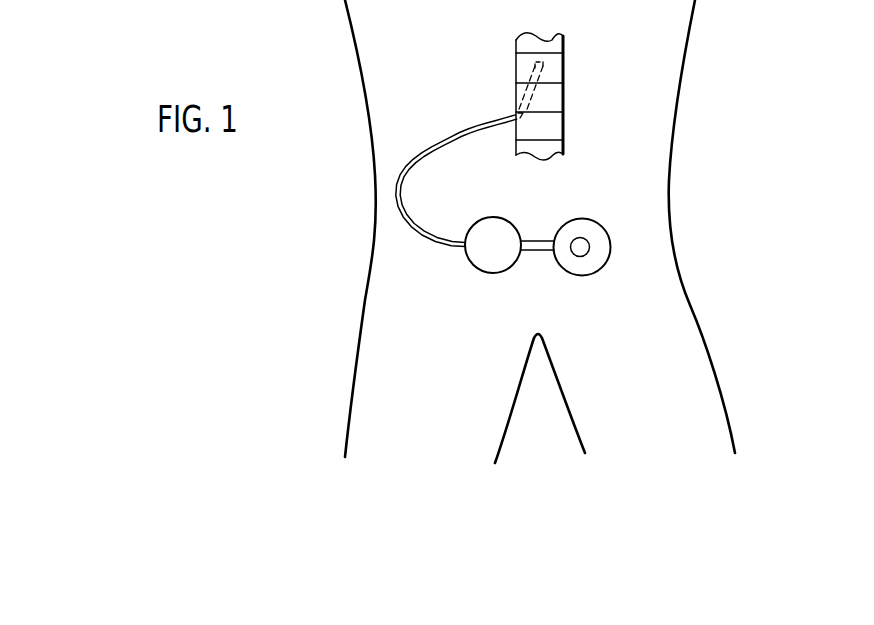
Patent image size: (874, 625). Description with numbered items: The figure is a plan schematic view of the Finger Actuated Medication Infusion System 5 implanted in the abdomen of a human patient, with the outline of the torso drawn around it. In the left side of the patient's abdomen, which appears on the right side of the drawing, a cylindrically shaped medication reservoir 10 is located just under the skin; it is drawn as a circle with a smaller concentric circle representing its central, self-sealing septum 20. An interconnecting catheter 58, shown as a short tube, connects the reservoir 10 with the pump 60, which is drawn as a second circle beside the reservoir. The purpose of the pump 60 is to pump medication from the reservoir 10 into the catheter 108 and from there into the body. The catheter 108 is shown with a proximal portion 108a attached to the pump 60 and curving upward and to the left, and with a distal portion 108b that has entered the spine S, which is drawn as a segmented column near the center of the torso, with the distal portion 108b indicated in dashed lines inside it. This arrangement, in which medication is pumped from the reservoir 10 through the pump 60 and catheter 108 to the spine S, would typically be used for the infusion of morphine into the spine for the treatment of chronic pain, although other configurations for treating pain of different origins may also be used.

The Finger Actuated Medication Infusion System 5 is at (678, 212).
The spine S is at (564, 62).
The catheter 108 is at (466, 135).
The proximal portion 108a is at (489, 202).
The distal portion 108b is at (542, 95).
The pump 60 is at (476, 267).
The interconnecting catheter 58 is at (537, 251).
The medication reservoir 10 is at (588, 274).
The self-sealing septum 20 is at (587, 240).